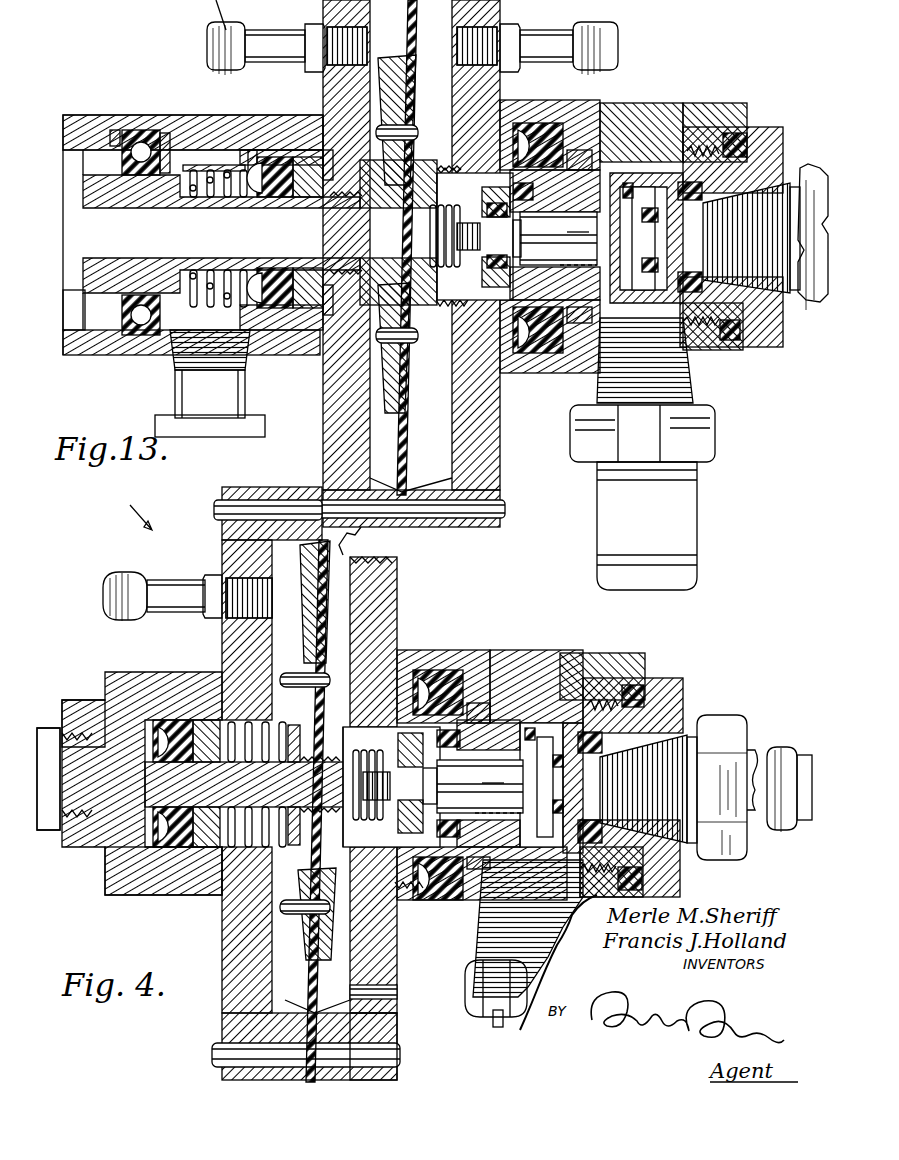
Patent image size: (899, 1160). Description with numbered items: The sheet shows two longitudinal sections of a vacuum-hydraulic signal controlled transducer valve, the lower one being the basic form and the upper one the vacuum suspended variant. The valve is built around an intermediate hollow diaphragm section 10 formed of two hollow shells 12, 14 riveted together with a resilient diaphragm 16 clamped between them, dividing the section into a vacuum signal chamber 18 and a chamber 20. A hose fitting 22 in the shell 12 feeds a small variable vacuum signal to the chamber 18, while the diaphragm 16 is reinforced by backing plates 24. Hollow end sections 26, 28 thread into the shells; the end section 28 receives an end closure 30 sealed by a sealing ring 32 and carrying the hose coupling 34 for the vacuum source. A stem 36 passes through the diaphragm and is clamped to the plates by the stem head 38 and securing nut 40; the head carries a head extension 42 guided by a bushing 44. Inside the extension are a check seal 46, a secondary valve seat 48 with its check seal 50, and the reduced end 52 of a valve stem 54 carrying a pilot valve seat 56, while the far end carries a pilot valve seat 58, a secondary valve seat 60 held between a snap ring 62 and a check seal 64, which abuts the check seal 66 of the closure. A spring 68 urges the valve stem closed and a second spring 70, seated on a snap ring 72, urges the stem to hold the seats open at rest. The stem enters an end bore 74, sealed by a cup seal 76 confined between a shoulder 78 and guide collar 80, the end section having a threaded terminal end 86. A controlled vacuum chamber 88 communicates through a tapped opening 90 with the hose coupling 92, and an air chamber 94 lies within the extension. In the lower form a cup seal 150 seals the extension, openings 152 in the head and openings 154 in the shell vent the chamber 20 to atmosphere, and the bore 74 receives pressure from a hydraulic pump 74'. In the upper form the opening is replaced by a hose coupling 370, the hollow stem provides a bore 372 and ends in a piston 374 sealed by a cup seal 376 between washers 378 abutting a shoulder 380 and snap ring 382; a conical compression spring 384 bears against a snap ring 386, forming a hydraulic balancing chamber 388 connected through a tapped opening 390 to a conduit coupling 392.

In FIG. 4, the hollow diaphragm section 10 is at (130, 508).
In FIG. 13, the hollow shell 12 is at (345, 445).
In FIG. 4, the hollow shell 12 is at (222, 1018).
In FIG. 4, the hollow shell 14 is at (380, 1018).
In FIG. 13, the resilient diaphragm 16 is at (405, 405).
In FIG. 4, the resilient diaphragm 16 is at (310, 975).
In FIG. 13, the reference fluid pressure chamber 18 is at (345, 432).
In FIG. 4, the reference fluid pressure chamber 18 is at (280, 938).
In FIG. 13, the controlled variable fluid pressure chamber 20 is at (440, 448).
In FIG. 4, the controlled variable fluid pressure chamber 20 is at (365, 962).
In FIG. 4, the hose fitting 22 is at (125, 577).
In FIG. 13, the backing plates 24 is at (395, 58).
In FIG. 4, the backing plates 24 is at (312, 612).
In FIG. 13, the end section 26 is at (300, 120).
In FIG. 4, the end section 26 is at (205, 900).
In FIG. 13, the end section 28 is at (710, 110).
In FIG. 4, the end section 28 is at (630, 660).
In FIG. 13, the end closure 30 is at (784, 158).
In FIG. 4, the end closure 30 is at (683, 715).
In FIG. 13, the sealing ring 32 is at (748, 135).
In FIG. 4, the sealing ring 32 is at (650, 700).
In FIG. 13, the hose coupling 34 is at (808, 182).
In FIG. 4, the hose coupling 34 is at (780, 748).
In FIG. 13, the stem 36 is at (350, 208).
In FIG. 4, the stem 36 is at (150, 785).
In FIG. 13, the stem head 38 is at (446, 306).
In FIG. 4, the stem head 38 is at (412, 900).
In FIG. 13, the securing nut 40 is at (360, 185).
In FIG. 4, the securing nut 40 is at (294, 726).
In FIG. 13, the head extension 42 is at (595, 115).
In FIG. 4, the head extension 42 is at (510, 705).
In FIG. 13, the bushing 44 is at (580, 150).
In FIG. 4, the bushing 44 is at (478, 703).
In FIG. 13, the check seal 46 is at (595, 242).
In FIG. 4, the check seal 46 is at (520, 785).
In FIG. 13, the secondary valve seat 48 is at (482, 282).
In FIG. 4, the secondary valve seat 48 is at (425, 755).
In FIG. 13, the check seal 50 is at (558, 237).
In FIG. 4, the check seal 50 is at (480, 786).
In FIG. 13, the reduced end 52 is at (510, 240).
In FIG. 4, the reduced end 52 is at (428, 787).
In FIG. 13, the valve stem 54 is at (580, 222).
In FIG. 4, the valve stem 54 is at (495, 774).
In FIG. 13, the pilot valve seat 56 is at (485, 208).
In FIG. 4, the pilot valve seat 56 is at (400, 765).
In FIG. 13, the pilot valve seat 58 is at (648, 238).
In FIG. 4, the pilot valve seat 58 is at (545, 737).
In FIG. 13, the secondary valve seat 60 is at (675, 173).
In FIG. 4, the secondary valve seat 60 is at (575, 723).
In FIG. 13, the snap ring 62 is at (623, 183).
In FIG. 4, the snap ring 62 is at (530, 728).
In FIG. 13, the check seal 64 is at (658, 214).
In FIG. 4, the check seal 64 is at (592, 753).
In FIG. 13, the check seal 66 is at (665, 285).
In FIG. 4, the check seal 66 is at (592, 820).
In FIG. 13, the spring 68 is at (428, 232).
In FIG. 4, the spring 68 is at (386, 815).
In FIG. 4, the second spring 70 is at (296, 840).
In FIG. 4, the snap ring 72 is at (210, 892).
In FIG. 13, the end bore 74 is at (77, 338).
In FIG. 4, the end bore 74 is at (53, 792).
In FIG. 13, the hydraulic pump 74' is at (191, 422).
In FIG. 4, the hydraulic pump 74' is at (60, 751).
In FIG. 13, the cup seal 76 is at (290, 268).
In FIG. 4, the cup seal 76 is at (168, 845).
In FIG. 4, the shoulder 78 is at (160, 720).
In FIG. 13, the guide collar 80 is at (318, 210).
In FIG. 4, the guide collar 80 is at (205, 720).
In FIG. 4, the terminal end 86 is at (60, 740).
In FIG. 13, the controlled vacuum chamber 88 is at (673, 310).
In FIG. 4, the controlled vacuum chamber 88 is at (570, 858).
In FIG. 13, the tapped opening 90 is at (705, 378).
In FIG. 4, the tapped opening 90 is at (540, 920).
In FIG. 13, the hose coupling 92 is at (697, 460).
In FIG. 4, the hose coupling 92 is at (493, 1025).
In FIG. 13, the air chamber 94 is at (490, 180).
In FIG. 4, the air chamber 94 is at (380, 720).
In FIG. 13, the cup seal 150 is at (535, 340).
In FIG. 4, the cup seal 150 is at (455, 900).
In FIG. 4, the openings 152 is at (402, 647).
In FIG. 4, the openings 154 is at (380, 994).
In FIG. 13, the hose coupling 370 is at (618, 40).
In FIG. 13, the bore 372 is at (88, 225).
In FIG. 13, the piston 374 is at (133, 200).
In FIG. 13, the cup seal 376 is at (140, 130).
In FIG. 13, the washers 378 is at (150, 335).
In FIG. 13, the shoulder 380 is at (170, 145).
In FIG. 13, the snap ring 382 is at (115, 130).
In FIG. 13, the conical compression spring 384 is at (238, 166).
In FIG. 13, the snap ring 386 is at (255, 150).
In FIG. 13, the hydraulic fluid pressure balancing chamber 388 is at (245, 165).
In FIG. 13, the tapped opening 390 is at (224, 320).
In FIG. 13, the conduit coupling 392 is at (175, 395).